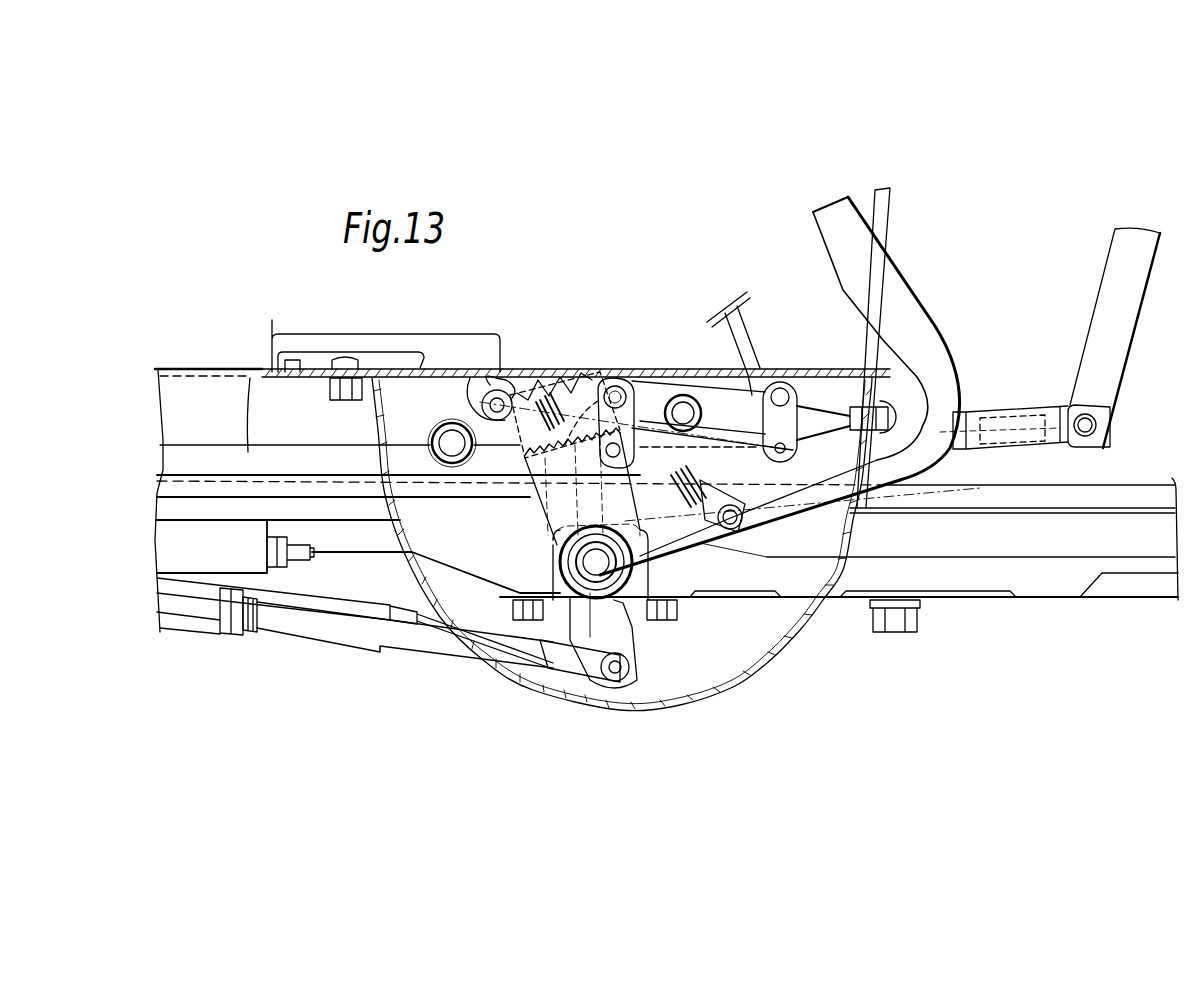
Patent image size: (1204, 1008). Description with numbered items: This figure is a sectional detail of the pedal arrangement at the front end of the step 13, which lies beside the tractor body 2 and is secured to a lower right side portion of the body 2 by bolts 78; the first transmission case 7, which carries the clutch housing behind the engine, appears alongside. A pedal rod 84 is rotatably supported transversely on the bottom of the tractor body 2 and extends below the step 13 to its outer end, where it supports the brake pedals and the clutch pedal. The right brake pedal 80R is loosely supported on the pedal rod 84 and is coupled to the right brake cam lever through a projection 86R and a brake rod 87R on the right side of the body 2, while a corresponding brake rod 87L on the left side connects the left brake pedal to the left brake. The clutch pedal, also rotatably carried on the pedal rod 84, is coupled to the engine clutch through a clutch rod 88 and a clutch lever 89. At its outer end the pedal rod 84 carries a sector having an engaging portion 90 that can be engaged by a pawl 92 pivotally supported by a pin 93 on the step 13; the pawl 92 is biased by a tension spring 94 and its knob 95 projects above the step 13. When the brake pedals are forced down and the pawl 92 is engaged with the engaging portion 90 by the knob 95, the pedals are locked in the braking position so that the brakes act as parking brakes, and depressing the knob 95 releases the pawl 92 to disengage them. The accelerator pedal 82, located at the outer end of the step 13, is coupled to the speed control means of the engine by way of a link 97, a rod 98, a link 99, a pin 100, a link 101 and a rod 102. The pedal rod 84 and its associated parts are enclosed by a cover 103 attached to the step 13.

The tractor body 2 is at (990, 612).
The first transmission case 7 is at (1043, 600).
The step 13 is at (192, 370).
The bolts 78 is at (446, 443).
The right brake pedal 80R is at (900, 288).
The accelerator pedal 82 is at (745, 322).
The pedal rod 84 is at (580, 562).
The projection 86R is at (630, 648).
The brake rod 87L is at (330, 592).
The brake rod 87R is at (300, 640).
The clutch rod 88 is at (823, 440).
The clutch lever 89 is at (1098, 315).
The engaging portion 90 is at (520, 456).
The pawl 92 is at (586, 384).
The pin 93 is at (507, 392).
The tension spring 94 is at (552, 385).
The knob 95 is at (460, 372).
The link 97 is at (650, 395).
The rod 98 is at (700, 447).
The link 99 is at (768, 419).
The pin 100 is at (780, 392).
The link 101 is at (824, 408).
The rod 102 is at (888, 209).
The cover 103 is at (705, 694).